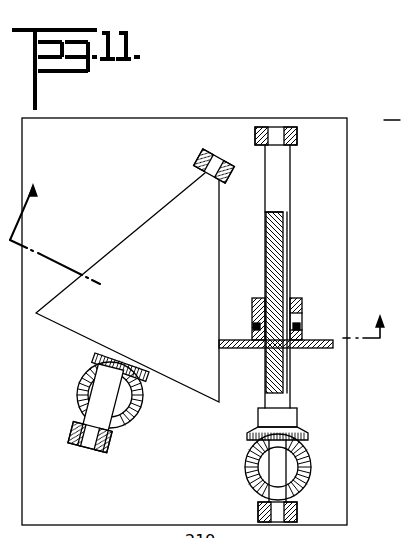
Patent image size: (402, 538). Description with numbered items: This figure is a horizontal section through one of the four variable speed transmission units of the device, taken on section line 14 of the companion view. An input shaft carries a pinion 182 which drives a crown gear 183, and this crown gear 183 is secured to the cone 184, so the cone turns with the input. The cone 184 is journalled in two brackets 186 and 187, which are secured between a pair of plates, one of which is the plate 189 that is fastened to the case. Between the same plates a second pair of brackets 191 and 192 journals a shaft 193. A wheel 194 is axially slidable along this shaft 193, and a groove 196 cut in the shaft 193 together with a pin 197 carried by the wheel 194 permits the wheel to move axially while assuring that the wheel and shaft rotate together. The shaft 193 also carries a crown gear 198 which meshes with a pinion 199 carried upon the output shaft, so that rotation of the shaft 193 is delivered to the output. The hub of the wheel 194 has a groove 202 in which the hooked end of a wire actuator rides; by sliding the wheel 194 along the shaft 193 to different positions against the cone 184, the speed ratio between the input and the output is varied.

The section line XIV-XIV 14 is at (201, 251).
The pinion 182 is at (132, 417).
The crown gear 183 is at (145, 380).
The cone 184 is at (133, 235).
The bracket 186 is at (108, 448).
The bracket 187 is at (193, 159).
The plate 189 is at (337, 103).
The bracket 191 is at (297, 508).
The bracket 192 is at (297, 133).
The shaft 193 is at (280, 187).
The wheel 194 is at (308, 348).
The groove 196 is at (288, 228).
The pin 197 is at (302, 305).
The crown gear 198 is at (302, 433).
The pinion 199 is at (311, 465).
The groove 202 is at (300, 328).